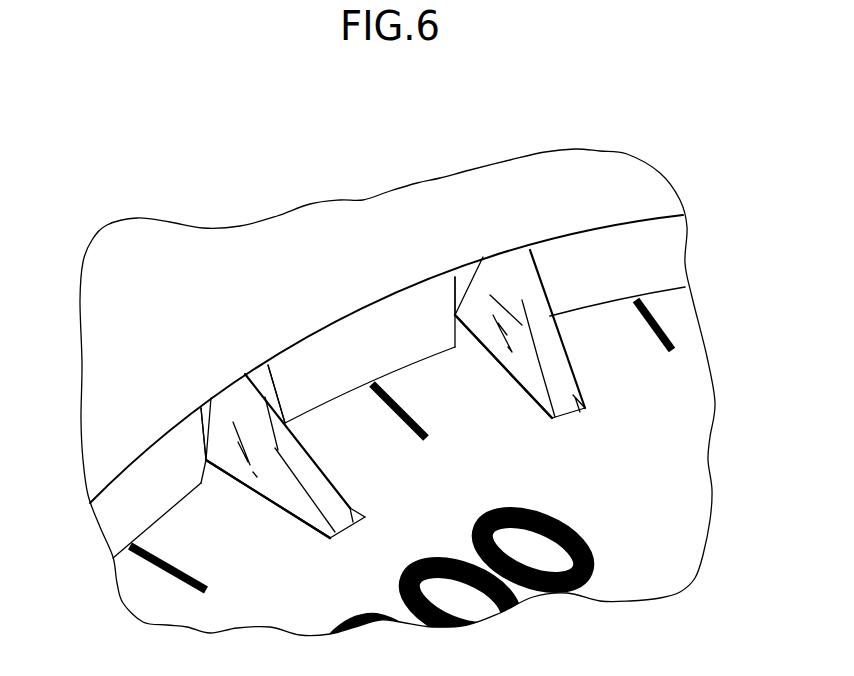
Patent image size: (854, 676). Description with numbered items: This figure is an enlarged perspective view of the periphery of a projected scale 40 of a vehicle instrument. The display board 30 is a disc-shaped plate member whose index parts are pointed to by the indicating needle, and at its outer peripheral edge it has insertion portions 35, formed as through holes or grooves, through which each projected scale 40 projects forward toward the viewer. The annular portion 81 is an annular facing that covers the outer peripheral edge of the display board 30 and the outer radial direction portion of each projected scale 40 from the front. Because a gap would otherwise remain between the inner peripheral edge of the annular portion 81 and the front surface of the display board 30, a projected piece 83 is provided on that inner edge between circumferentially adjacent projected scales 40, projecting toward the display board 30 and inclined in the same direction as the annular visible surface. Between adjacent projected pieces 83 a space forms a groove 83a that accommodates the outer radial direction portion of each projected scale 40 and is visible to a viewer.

The display board 30 is at (677, 443).
The annular portion 81 is at (108, 404).
The projected piece 83 is at (153, 478).
The groove 83a is at (268, 365).
The projected scale 40 is at (240, 388).
The insertion portion 35 is at (265, 503).